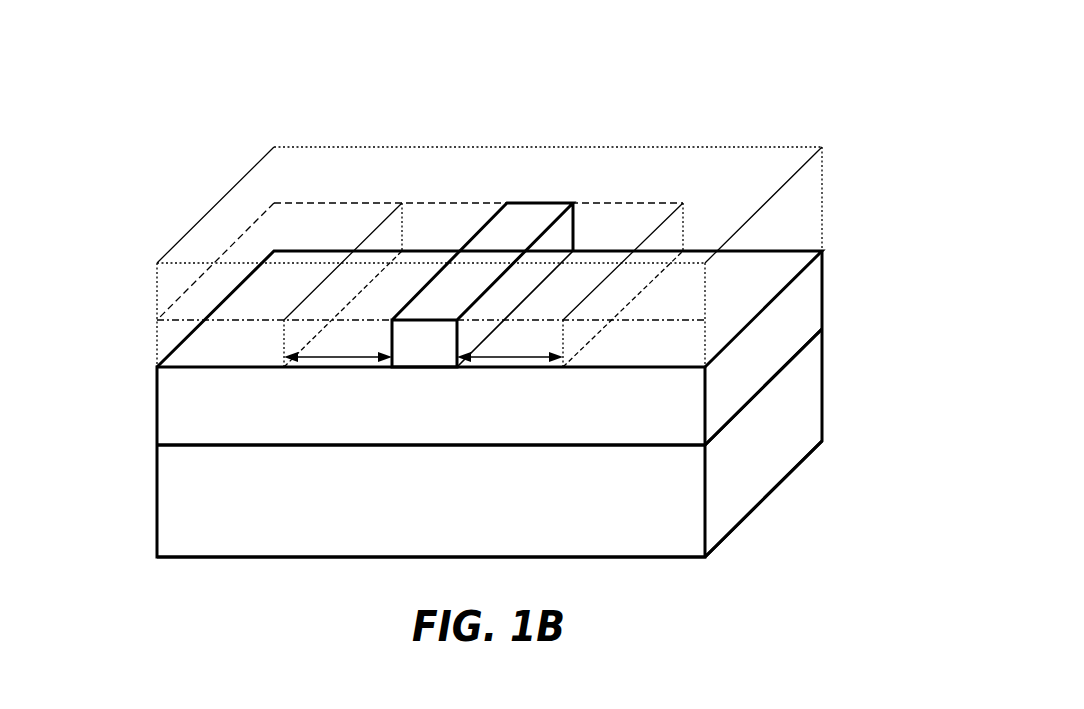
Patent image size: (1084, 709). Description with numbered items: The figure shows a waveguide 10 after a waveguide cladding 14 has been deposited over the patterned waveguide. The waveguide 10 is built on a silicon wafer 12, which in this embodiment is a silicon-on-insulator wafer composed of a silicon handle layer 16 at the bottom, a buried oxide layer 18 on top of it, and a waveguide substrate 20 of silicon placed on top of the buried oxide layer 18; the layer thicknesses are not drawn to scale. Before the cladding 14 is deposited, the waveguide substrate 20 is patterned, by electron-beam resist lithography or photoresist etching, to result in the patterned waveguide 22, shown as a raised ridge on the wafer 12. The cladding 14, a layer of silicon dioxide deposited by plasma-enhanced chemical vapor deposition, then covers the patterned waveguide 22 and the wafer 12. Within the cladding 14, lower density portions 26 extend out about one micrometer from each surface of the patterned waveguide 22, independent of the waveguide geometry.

The waveguide 10 is at (190, 177).
The silicon wafer 12 is at (142, 368).
The waveguide cladding 14 is at (835, 147).
The silicon handle layer 16 is at (835, 329).
The buried oxide layer 18 is at (835, 251).
The waveguide substrate 20 is at (142, 322).
The patterned waveguide 22 is at (555, 210).
The lower density portions 26 is at (543, 333).